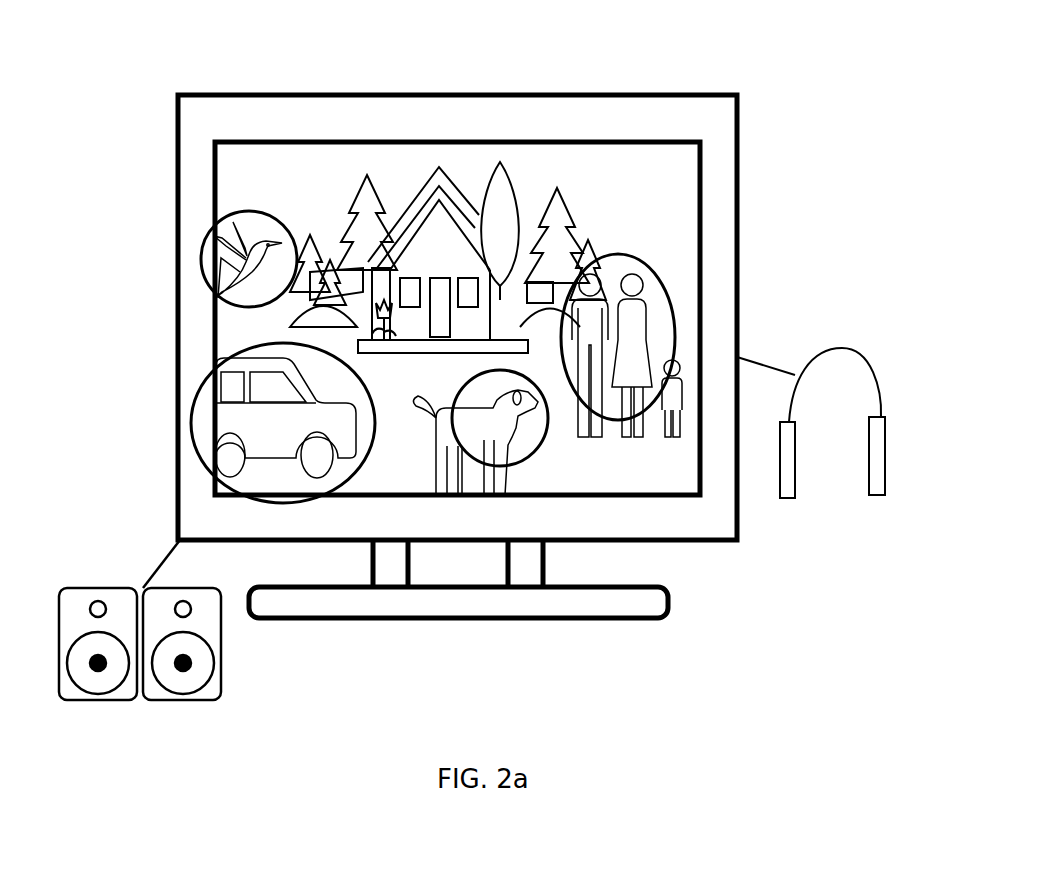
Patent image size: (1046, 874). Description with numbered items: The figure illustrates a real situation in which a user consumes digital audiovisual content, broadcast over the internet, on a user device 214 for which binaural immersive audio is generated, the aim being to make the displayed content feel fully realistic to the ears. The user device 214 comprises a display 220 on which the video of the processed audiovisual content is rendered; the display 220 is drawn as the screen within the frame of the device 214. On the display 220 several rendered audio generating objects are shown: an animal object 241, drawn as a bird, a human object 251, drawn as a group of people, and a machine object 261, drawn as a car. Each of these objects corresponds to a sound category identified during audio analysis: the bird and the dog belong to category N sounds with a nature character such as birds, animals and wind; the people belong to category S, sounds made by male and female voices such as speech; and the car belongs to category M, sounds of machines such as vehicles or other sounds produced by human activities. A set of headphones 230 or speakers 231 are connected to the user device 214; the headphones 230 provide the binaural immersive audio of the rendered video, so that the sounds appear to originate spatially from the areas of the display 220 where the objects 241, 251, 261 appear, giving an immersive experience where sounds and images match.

The user device 214 is at (203, 104).
The display 220 is at (319, 162).
The animal object 241 is at (220, 238).
The human object 251 is at (670, 298).
The machine object 261 is at (235, 414).
The headphones 230 is at (882, 432).
The speakers 231 is at (106, 588).
The category N sounds N is at (497, 370).
The category S sounds S is at (659, 276).
The category M sounds M is at (372, 421).